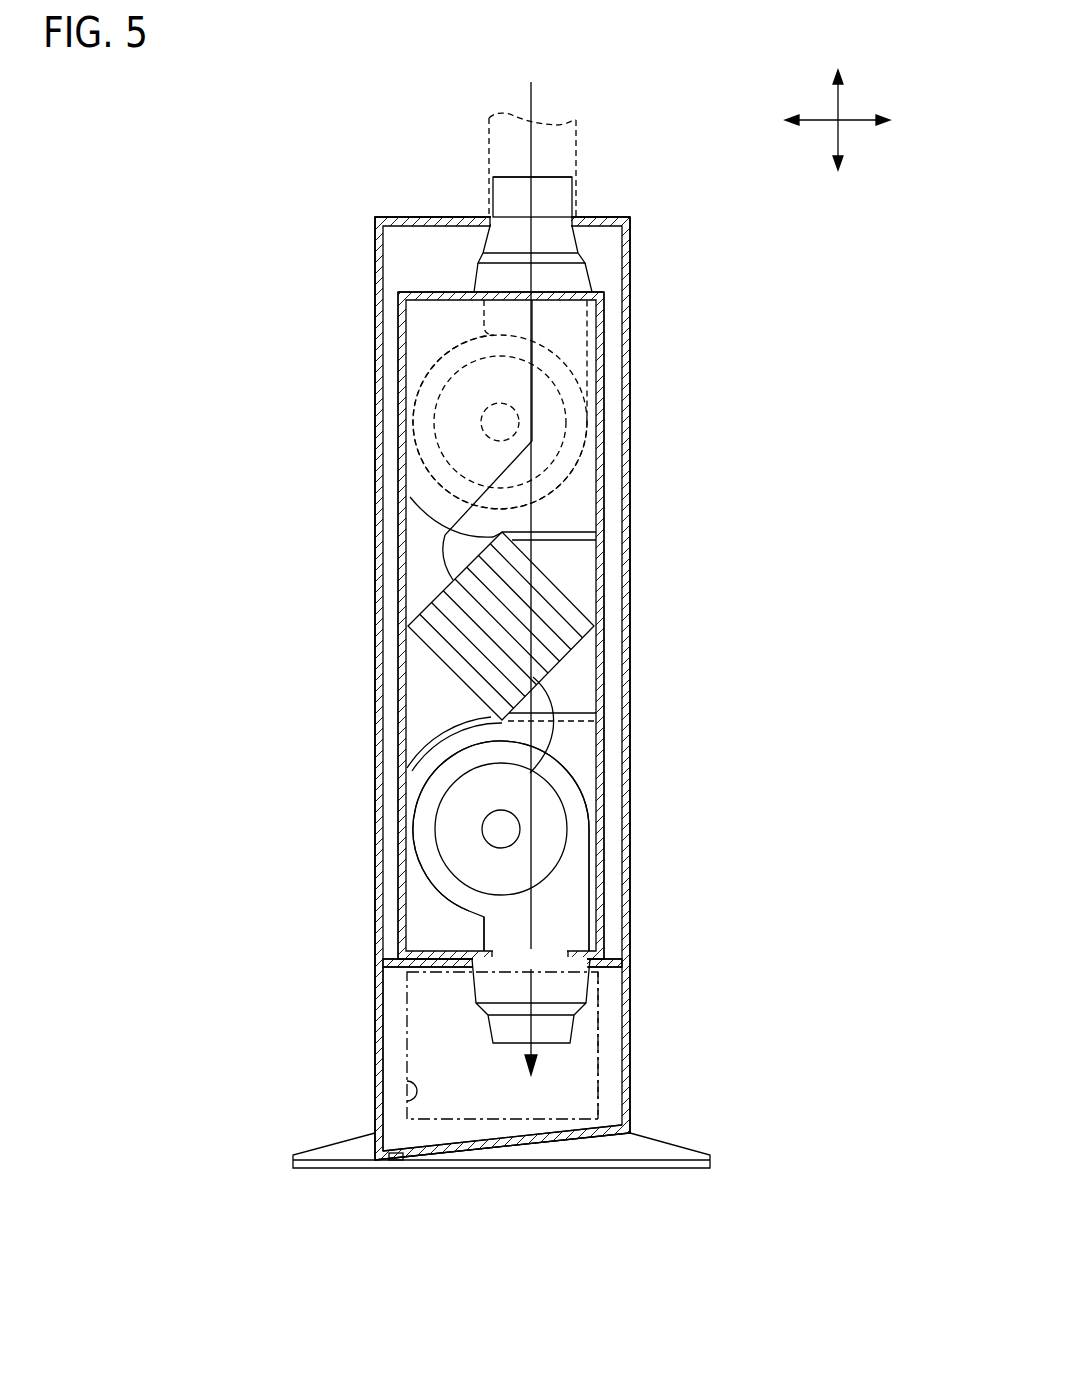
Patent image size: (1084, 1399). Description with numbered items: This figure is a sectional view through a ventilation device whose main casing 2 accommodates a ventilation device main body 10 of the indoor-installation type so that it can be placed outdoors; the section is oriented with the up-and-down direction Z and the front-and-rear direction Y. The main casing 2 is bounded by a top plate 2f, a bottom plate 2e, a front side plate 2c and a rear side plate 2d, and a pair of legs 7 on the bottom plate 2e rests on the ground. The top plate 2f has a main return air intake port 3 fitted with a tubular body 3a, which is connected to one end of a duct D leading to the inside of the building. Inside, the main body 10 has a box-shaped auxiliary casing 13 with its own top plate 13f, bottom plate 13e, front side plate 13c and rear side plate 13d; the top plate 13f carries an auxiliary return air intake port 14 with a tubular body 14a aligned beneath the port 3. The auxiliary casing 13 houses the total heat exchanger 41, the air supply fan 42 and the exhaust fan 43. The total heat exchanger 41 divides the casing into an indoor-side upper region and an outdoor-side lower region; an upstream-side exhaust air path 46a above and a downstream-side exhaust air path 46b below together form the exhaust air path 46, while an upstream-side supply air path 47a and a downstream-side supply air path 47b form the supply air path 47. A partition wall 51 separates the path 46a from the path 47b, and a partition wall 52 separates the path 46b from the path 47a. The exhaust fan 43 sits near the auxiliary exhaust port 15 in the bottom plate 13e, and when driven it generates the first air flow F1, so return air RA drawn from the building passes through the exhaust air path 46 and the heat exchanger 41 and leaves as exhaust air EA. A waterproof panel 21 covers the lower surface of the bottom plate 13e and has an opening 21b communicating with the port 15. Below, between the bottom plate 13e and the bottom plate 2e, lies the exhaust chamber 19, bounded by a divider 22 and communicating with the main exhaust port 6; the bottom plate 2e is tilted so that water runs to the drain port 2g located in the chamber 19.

The main casing 2 is at (370, 211).
The front side plate 2c is at (630, 555).
The rear side plate 2d is at (375, 570).
The bottom plate 2e is at (505, 1150).
The top plate 2f is at (437, 216).
The drain port 2g is at (393, 1162).
The main return air intake port 3 is at (572, 215).
The tubular body 3a is at (556, 177).
The main exhaust port 6 is at (407, 1082).
The legs 7 is at (325, 1170).
The ventilation device main body 10 is at (392, 451).
The auxiliary casing 13 is at (392, 407).
The front side plate 13c is at (604, 590).
The rear side plate 13d is at (398, 601).
The bottom plate 13e is at (437, 965).
The top plate 13f is at (445, 292).
The auxiliary return air intake port 14 is at (589, 280).
The tubular body 14a is at (578, 238).
The auxiliary exhaust port 15 is at (560, 951).
The exhaust chamber 19 is at (575, 1065).
The waterproof panel 21 is at (606, 968).
The opening 21b is at (588, 968).
The divider 22 is at (395, 1023).
The total heat exchanger 41 is at (455, 647).
The air supply fan 42 is at (592, 332).
The exhaust fan 43 is at (577, 872).
The exhaust air path 46 is at (425, 609).
The upstream-side exhaust air path 46a is at (432, 340).
The downstream-side exhaust air path 46b is at (466, 822).
The supply air path 47 is at (577, 643).
The upstream-side supply air path 47a is at (570, 757).
The downstream-side supply air path 47b is at (592, 505).
The partition wall 51 is at (412, 522).
The partition wall 52 is at (577, 728).
The duct D is at (489, 145).
The return air RA is at (531, 554).
The exhaust air EA is at (532, 1086).
The first air flow F1 is at (533, 380).
The vertical axis Z is at (838, 98).
The front-rear axis Y is at (853, 122).